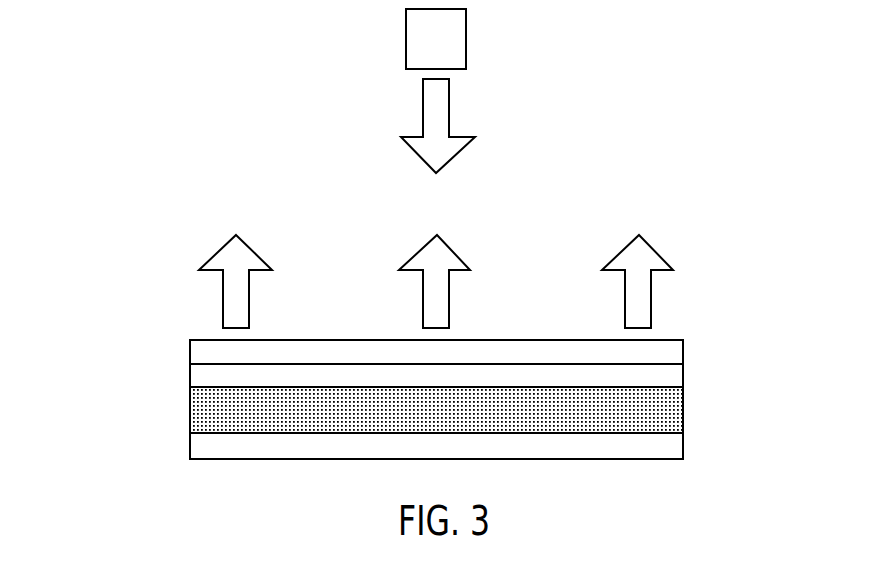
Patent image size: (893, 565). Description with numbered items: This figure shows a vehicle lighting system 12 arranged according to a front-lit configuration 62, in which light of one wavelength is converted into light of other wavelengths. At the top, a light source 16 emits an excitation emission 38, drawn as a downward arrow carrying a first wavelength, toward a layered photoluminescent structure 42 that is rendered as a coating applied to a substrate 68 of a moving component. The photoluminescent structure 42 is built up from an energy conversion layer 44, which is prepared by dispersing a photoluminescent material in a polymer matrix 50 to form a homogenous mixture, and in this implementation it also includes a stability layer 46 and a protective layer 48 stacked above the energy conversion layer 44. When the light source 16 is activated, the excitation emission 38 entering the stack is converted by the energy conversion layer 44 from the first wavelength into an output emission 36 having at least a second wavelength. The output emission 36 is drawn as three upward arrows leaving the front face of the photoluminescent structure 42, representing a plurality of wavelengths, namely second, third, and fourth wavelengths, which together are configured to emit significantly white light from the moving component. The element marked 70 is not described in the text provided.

The lighting system 12 is at (211, 101).
The light source 16 is at (424, 50).
The output emission 36 is at (262, 256).
The excitation emission 38 is at (425, 103).
The photoluminescent structure 42 is at (118, 395).
The energy conversion layer 44 is at (675, 408).
The stability layer 46 is at (680, 376).
The protective layer 48 is at (680, 352).
The polymer matrix 50 is at (205, 407).
The front-lit configuration 62 is at (550, 152).
The substrate 68 is at (677, 445).
The emission surface 70 is at (150, 318).